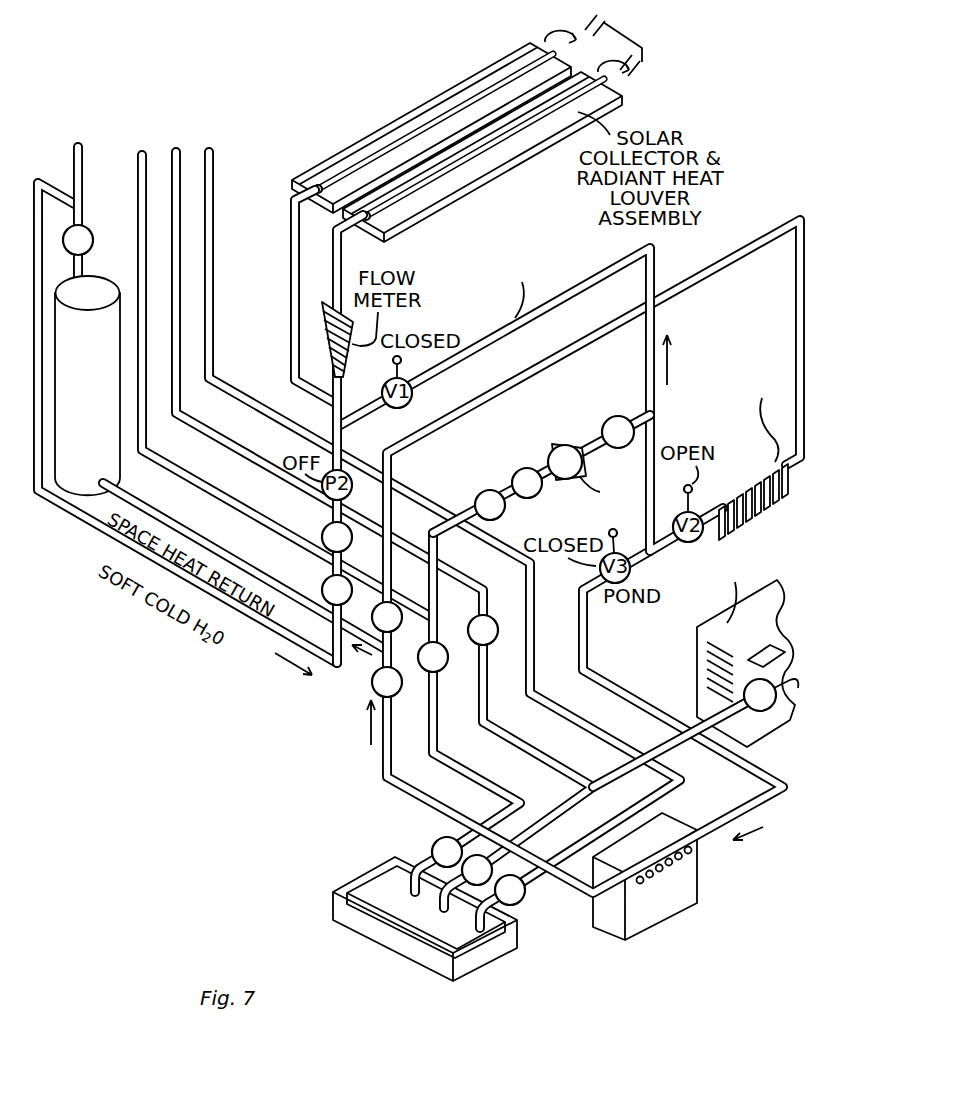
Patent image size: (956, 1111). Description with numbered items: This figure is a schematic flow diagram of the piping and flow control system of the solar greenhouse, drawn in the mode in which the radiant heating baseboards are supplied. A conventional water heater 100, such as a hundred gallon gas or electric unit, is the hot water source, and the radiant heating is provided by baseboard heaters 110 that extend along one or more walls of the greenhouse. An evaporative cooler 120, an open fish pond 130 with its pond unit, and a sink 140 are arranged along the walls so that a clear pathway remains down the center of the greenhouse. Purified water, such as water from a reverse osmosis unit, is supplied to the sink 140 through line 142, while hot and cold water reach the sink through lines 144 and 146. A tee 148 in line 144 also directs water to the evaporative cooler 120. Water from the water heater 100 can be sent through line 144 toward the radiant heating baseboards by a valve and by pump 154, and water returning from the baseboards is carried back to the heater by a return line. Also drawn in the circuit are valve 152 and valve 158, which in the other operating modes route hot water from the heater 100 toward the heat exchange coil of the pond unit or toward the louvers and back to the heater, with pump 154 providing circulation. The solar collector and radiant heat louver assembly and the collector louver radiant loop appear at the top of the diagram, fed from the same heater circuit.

The water heater 100 is at (82, 497).
The baseboard heaters 110 is at (742, 468).
The evaporative cooler 120 is at (694, 670).
The open fish pond 130 is at (674, 830).
The sink 140 is at (362, 880).
The line 142 is at (260, 396).
The line 144 is at (322, 546).
The line 146 is at (542, 758).
The tee 148 is at (605, 785).
The valve 152 is at (488, 492).
The pump 154 is at (562, 448).
The valve 158 is at (758, 243).